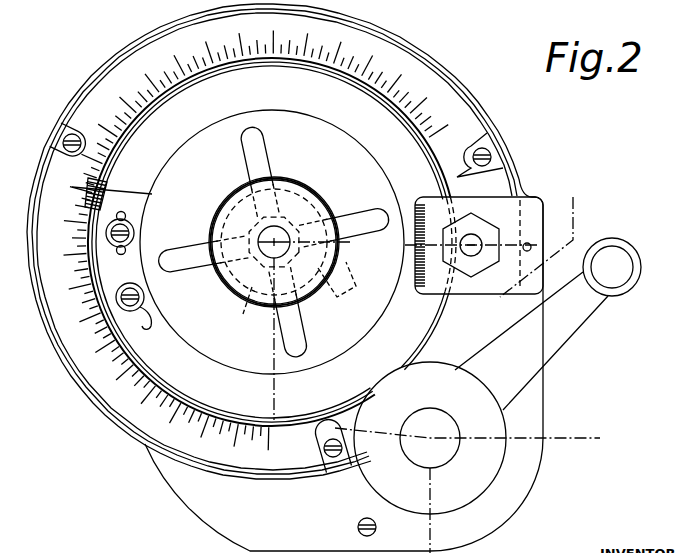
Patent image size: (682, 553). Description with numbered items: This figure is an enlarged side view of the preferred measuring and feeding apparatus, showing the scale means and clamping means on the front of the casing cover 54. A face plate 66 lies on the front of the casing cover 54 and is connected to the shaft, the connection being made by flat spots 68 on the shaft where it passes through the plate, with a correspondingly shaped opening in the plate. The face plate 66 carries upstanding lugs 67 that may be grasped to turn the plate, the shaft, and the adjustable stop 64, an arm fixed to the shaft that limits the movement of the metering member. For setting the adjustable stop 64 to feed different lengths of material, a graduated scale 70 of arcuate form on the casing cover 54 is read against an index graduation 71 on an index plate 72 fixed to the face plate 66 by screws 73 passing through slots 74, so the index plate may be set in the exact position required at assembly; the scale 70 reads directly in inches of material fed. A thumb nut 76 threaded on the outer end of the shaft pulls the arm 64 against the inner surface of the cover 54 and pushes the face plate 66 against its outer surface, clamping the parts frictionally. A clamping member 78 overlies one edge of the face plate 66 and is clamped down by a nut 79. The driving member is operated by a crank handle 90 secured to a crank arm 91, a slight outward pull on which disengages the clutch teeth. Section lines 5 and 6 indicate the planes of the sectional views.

The casing cover 54 is at (503, 182).
The graduated scale 70 is at (432, 78).
The face plate 66 is at (410, 333).
The index graduation 71 is at (110, 197).
The screws 73 is at (134, 232).
The slots 74 is at (148, 312).
The index plate 72 is at (151, 326).
The lugs 67 is at (249, 151).
The thumb nut 76 is at (303, 187).
The flat spots 68 is at (250, 310).
The adjustable stop 64 is at (341, 298).
The clamping member 78 is at (495, 288).
The nut 79 is at (486, 231).
The crank arm 91 is at (573, 323).
The crank handle 90 is at (637, 257).
The section line 5- 5 is at (617, 202).
The section line 6- 6 is at (605, 375).